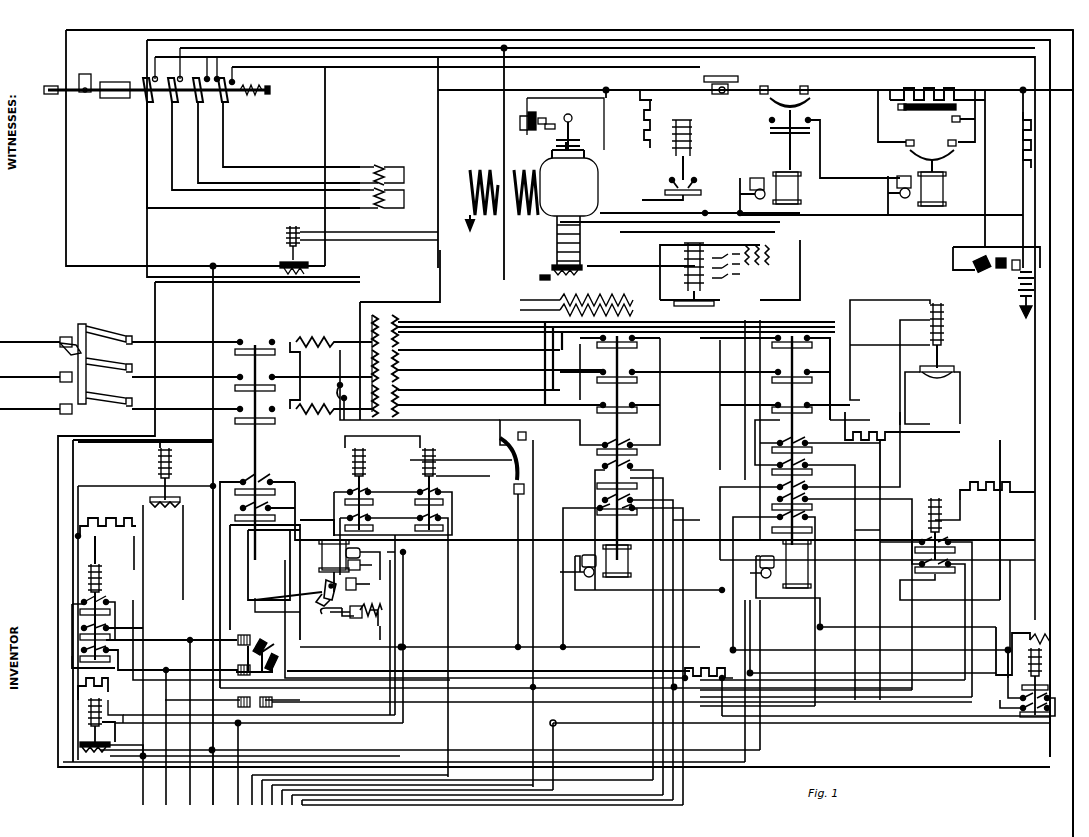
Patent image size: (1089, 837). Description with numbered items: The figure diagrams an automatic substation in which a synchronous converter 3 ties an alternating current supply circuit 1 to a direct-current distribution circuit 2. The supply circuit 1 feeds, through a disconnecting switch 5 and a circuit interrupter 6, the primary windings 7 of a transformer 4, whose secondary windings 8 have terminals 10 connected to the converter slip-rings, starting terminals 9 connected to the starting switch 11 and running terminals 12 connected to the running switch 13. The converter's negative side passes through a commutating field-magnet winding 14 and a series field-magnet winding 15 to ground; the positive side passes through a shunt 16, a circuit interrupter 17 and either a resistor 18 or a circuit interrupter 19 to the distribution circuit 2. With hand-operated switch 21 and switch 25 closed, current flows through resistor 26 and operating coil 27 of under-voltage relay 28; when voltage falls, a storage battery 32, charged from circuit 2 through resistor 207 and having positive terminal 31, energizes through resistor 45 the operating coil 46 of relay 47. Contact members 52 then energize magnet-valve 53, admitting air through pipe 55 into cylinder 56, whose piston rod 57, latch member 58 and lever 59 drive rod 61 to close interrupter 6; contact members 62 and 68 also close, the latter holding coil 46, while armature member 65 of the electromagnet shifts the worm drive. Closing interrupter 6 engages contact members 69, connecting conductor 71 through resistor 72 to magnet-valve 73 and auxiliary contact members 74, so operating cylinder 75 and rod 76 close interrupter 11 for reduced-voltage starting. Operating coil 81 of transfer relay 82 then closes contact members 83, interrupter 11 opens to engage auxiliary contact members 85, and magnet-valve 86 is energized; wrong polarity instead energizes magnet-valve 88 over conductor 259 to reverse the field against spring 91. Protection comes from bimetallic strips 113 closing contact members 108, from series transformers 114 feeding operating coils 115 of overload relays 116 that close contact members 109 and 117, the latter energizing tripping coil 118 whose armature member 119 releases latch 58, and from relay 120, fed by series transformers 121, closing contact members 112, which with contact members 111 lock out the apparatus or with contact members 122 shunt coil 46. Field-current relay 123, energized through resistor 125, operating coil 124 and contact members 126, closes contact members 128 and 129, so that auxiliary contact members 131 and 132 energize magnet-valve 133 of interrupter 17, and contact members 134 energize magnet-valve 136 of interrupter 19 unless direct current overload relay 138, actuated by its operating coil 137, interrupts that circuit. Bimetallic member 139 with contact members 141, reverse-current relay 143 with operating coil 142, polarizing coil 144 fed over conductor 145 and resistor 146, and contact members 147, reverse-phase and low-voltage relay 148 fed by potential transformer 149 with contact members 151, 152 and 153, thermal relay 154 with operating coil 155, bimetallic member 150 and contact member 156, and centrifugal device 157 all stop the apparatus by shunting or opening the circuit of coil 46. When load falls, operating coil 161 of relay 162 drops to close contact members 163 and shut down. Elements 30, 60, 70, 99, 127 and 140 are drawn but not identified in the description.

The alternating current supply circuit 1 is at (4, 400).
The direct-current distribution circuit 2 is at (992, 92).
The synchronous converter 3 is at (596, 188).
The transformer 4 is at (400, 335).
The disconnecting switch 5 is at (108, 332).
The circuit interrupter 6 is at (254, 345).
The primary windings 7 is at (368, 330).
The secondary windings 8 is at (400, 366).
The starting terminals 9 is at (406, 330).
The terminals 10 is at (410, 310).
The starting switch 11 is at (630, 443).
The running terminals 12 is at (411, 342).
The running switch 13 is at (785, 432).
The commutating field-magnet winding 14 is at (518, 172).
The series field-magnet winding 15 is at (480, 172).
The shunt 16 is at (722, 88).
The circuit interrupter 17 is at (788, 104).
The resistor 18 is at (926, 86).
The circuit interrupter 19 is at (931, 155).
The hand-operated switch 21 is at (988, 272).
The switch 25 is at (246, 652).
The resistor 26 is at (90, 686).
The operating coil 27 is at (100, 710).
The under-voltage relay 28 is at (92, 740).
The ground 30 is at (1031, 313).
The positive terminal 31 is at (1028, 264).
The storage battery 32 is at (1031, 289).
The resistor 45 is at (92, 526).
The operating coil 46 is at (100, 580).
The relay 47 is at (98, 596).
The contact members 52 is at (72, 608).
The magnet-valve 53 is at (363, 563).
The pipe 55 is at (60, 92).
The cylinder 56 is at (322, 556).
The piston rod 57 is at (324, 588).
The latch member 58 is at (358, 574).
The lever 59 is at (528, 124).
The contact 60 is at (612, 444).
The rod 61 is at (536, 118).
The contact members 62 is at (84, 628).
The armature member 65 is at (572, 574).
The contact members 68 is at (84, 648).
The contact members 69 is at (178, 102).
The conductor 70 is at (548, 92).
The conductor 71 is at (294, 506).
The resistor 72 is at (686, 668).
The magnet-valve 73 is at (590, 554).
The auxiliary contact members 74 is at (780, 512).
The operating cylinder 75 is at (617, 547).
The rod 76 is at (624, 498).
The operating coil 81 is at (1036, 640).
The transfer relay 82 is at (388, 178).
The contact members 83 is at (392, 198).
The auxiliary contact members 85 is at (610, 498).
The magnet-valve 86 is at (774, 552).
The magnet-valve 88 is at (86, 74).
The spring 91 is at (252, 84).
The contact 99 is at (612, 512).
The contact members 108 is at (558, 278).
The contact members 109 is at (418, 512).
The contact members 111 is at (620, 470).
The contact members 112 is at (702, 296).
The bimetallic strips 113 is at (578, 266).
The series transformers 114 is at (312, 398).
The operating coils 115 is at (420, 462).
The alternating current overload relays 116 is at (422, 476).
The contact members 117 is at (424, 492).
The tripping coil 118 is at (372, 608).
The armature member 119 is at (346, 608).
The relay 120 is at (676, 258).
The series transformers 121 is at (768, 246).
The contact members 122 is at (608, 462).
The field-current relay 123 is at (940, 530).
The operating coil 124 is at (940, 508).
The resistor 125 is at (972, 488).
The contact members 126 is at (796, 440).
The resistor 127 is at (876, 430).
The contact members 128 is at (922, 542).
The contact members 129 is at (924, 560).
The auxiliary contact members 131 is at (246, 504).
The auxiliary contact members 132 is at (800, 462).
The magnet-valve 133 is at (762, 178).
The contact members 134 is at (774, 122).
The magnet-valve 136 is at (916, 178).
The operating coil 137 is at (286, 236).
The direct current overload relay 138 is at (286, 260).
The bimetallic member 139 is at (944, 108).
The contact 140 is at (572, 116).
The contact members 141 is at (956, 120).
The operating coil 142 is at (690, 124).
The reverse-current relay 143 is at (688, 176).
The polarizing coil 144 is at (692, 146).
The conductor 145 is at (640, 90).
The resistor 146 is at (652, 110).
The contact members 147 is at (672, 188).
The reverse-phase and low-voltage relay 148 is at (936, 360).
The potential transformer 149 is at (576, 305).
The bimetallic member 150 is at (506, 442).
The contact members 151 is at (932, 395).
The auxiliary contact members 152 is at (786, 482).
The contact members 153 is at (786, 494).
The thermal relay 154 is at (516, 484).
The operating coil 155 is at (510, 462).
The contact member 156 is at (522, 434).
The centrifugal device 157 is at (548, 120).
The operating coil 161 is at (172, 468).
The relay 162 is at (158, 466).
The contact members 163 is at (162, 502).
The resistor 207 is at (1020, 142).
The conductor 259 is at (1073, 778).